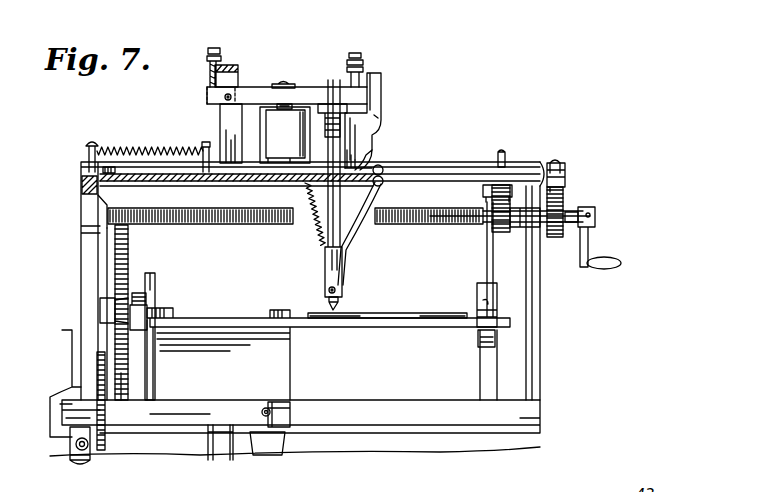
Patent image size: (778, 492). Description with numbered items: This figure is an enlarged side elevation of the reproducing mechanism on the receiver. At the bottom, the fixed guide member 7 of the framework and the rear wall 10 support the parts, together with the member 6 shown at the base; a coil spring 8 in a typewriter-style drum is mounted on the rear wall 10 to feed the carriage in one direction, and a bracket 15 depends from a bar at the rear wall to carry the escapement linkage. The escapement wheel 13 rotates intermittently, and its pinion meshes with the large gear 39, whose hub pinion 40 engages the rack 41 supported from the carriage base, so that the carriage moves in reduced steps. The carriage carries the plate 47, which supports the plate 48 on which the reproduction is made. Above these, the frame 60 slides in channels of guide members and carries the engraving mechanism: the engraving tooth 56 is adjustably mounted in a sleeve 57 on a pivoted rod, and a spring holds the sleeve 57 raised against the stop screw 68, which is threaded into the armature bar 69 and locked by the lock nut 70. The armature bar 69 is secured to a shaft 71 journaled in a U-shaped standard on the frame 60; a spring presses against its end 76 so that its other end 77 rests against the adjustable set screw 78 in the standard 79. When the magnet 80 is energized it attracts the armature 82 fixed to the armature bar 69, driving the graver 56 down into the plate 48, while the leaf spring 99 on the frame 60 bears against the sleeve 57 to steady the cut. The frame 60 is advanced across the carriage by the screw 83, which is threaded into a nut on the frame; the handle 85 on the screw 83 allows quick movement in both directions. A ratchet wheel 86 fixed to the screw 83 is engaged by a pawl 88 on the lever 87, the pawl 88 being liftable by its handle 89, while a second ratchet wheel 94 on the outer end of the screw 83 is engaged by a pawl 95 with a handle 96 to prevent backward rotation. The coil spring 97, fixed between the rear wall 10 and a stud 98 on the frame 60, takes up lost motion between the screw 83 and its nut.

The base plate 6 is at (147, 413).
The fixed guide member 7 is at (280, 405).
The coil spring 8 is at (222, 455).
The rear wall 10 is at (82, 190).
The escapement wheel 13 is at (103, 453).
The bracket 15 is at (75, 447).
The large gear 39 is at (128, 248).
The pinion 40 is at (137, 297).
The rack 41 is at (143, 330).
The plate 47 is at (378, 325).
The plate 48 is at (403, 313).
The engraving tooth 56 is at (328, 307).
The sleeve 57 is at (340, 292).
The frame 60 is at (262, 179).
The stop screw 68 is at (360, 153).
The armature bar 69 is at (310, 87).
The lock nut 70 is at (340, 127).
The shaft 71 is at (222, 103).
The end of armature bar 76 is at (207, 97).
The other end of armature bar 77 is at (365, 92).
The adjustable set screw 78 is at (367, 73).
The standard 79 is at (374, 98).
The magnet 80 is at (242, 117).
The armature 82 is at (285, 82).
The screw 83 is at (205, 226).
The handle 85 is at (603, 269).
The ratchet wheel 86 is at (502, 232).
The lever 87 is at (488, 263).
The pawl 88 is at (507, 185).
The handle 89 is at (503, 152).
The ratchet wheel 94 is at (557, 237).
The pawl 95 is at (563, 183).
The handle 96 is at (556, 165).
The coil spring 97 is at (130, 147).
The stud 98 is at (200, 141).
The leaf spring 99 is at (366, 194).